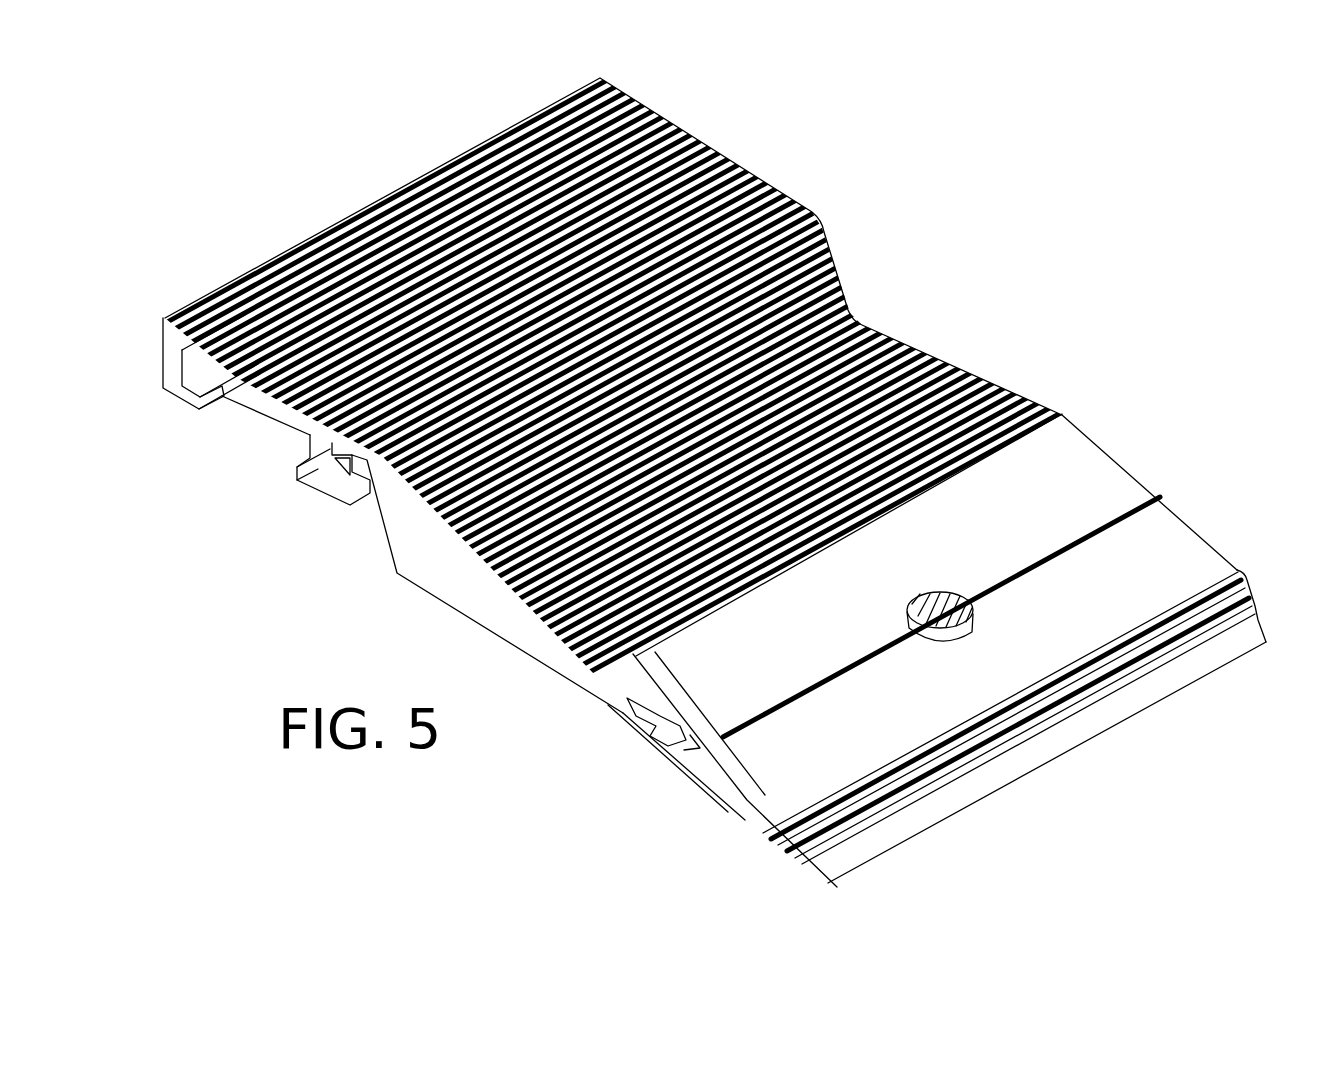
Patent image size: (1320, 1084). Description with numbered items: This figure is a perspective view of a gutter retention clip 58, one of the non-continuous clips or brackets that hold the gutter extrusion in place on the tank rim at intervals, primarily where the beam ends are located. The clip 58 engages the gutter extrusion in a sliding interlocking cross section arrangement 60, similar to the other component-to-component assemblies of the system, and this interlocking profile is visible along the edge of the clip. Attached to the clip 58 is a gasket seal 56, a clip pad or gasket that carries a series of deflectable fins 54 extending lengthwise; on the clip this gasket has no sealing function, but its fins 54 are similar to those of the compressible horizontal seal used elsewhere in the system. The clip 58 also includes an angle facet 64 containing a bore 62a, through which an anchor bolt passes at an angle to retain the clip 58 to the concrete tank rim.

The gutter retention clip 58 is at (984, 296).
The sliding interlocking cross section arrangement 60 is at (287, 497).
The angle facet 64 is at (1057, 497).
The bore 62a is at (950, 643).
The fins 54 is at (830, 883).
The gasket seal 56 is at (575, 707).